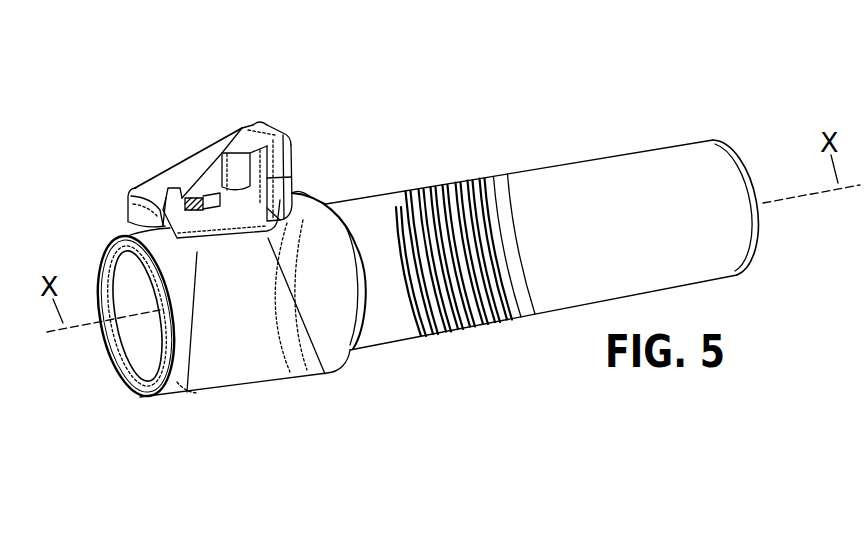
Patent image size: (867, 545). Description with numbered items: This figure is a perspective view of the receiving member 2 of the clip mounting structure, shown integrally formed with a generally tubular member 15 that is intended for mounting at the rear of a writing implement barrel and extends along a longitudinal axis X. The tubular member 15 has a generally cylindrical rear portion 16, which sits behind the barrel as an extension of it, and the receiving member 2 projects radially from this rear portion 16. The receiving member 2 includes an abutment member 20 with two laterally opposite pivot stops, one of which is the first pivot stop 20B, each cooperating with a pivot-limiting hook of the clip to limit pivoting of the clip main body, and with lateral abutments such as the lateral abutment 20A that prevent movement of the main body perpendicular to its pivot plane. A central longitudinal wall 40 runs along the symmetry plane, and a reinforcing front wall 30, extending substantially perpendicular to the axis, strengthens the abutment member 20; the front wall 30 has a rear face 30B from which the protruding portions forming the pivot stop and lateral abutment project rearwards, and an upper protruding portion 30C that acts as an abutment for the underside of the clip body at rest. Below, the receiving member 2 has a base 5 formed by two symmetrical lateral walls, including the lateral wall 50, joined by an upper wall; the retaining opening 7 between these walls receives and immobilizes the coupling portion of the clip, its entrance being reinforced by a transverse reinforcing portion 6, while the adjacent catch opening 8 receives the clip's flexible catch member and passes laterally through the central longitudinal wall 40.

The receiving member 2 is at (236, 241).
The base 5 is at (200, 240).
The transverse reinforcing portion 6 is at (142, 200).
The retaining opening 7 is at (130, 228).
The catch opening 8 is at (186, 199).
The generally tubular member 15 is at (615, 140).
The generally cylindrical rear portion 16 is at (243, 287).
The abutment member 20 is at (255, 121).
The lateral abutment 20A is at (242, 163).
The first pivot stop 20B is at (291, 177).
The reinforcing front wall 30 is at (330, 226).
The rear face 30B is at (280, 212).
The upper protruding portion 30C is at (258, 124).
The central longitudinal wall 40 is at (213, 165).
The lateral wall 50 is at (220, 233).